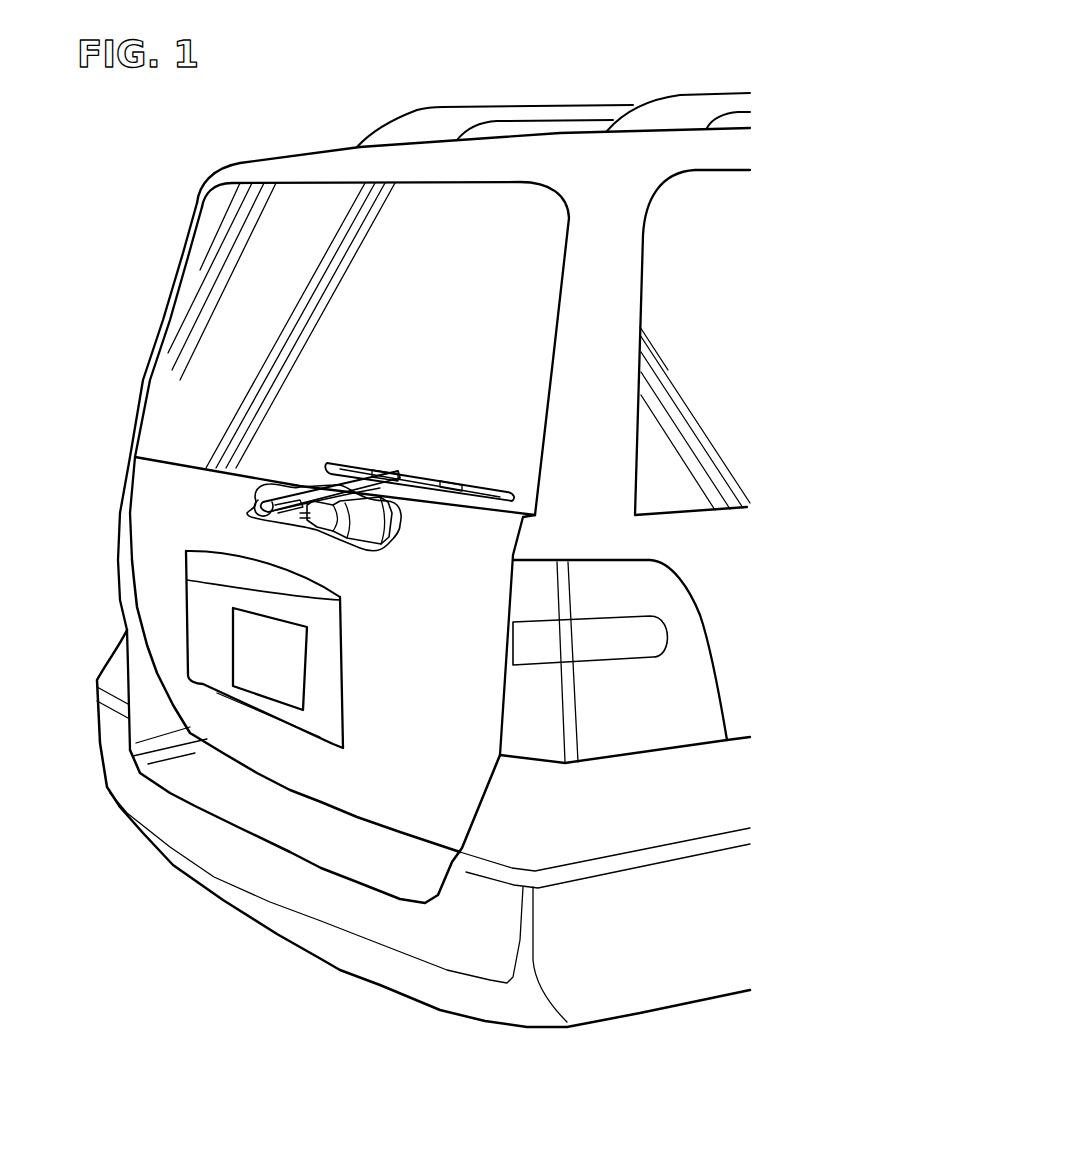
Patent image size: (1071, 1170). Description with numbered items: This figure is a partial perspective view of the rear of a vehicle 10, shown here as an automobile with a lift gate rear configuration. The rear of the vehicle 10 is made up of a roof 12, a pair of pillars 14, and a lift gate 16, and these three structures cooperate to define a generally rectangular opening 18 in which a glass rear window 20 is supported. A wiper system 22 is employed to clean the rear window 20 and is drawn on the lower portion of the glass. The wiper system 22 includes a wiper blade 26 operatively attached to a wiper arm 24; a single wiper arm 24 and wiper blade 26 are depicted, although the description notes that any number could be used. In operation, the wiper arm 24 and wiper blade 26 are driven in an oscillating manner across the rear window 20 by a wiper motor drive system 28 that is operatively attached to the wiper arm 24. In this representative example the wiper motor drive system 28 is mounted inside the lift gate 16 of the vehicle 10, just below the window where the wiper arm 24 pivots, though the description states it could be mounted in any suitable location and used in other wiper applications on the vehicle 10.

The vehicle 10 is at (135, 241).
The roof 12 is at (283, 153).
The pillars 14 is at (587, 340).
The lift gate 16 is at (150, 530).
The opening 18 is at (197, 202).
The rear window 20 is at (479, 272).
The wiper system 22 is at (366, 459).
The wiper arm 24 is at (322, 487).
The wiper blade 26 is at (467, 493).
The wiper motor drive system 28 is at (346, 533).